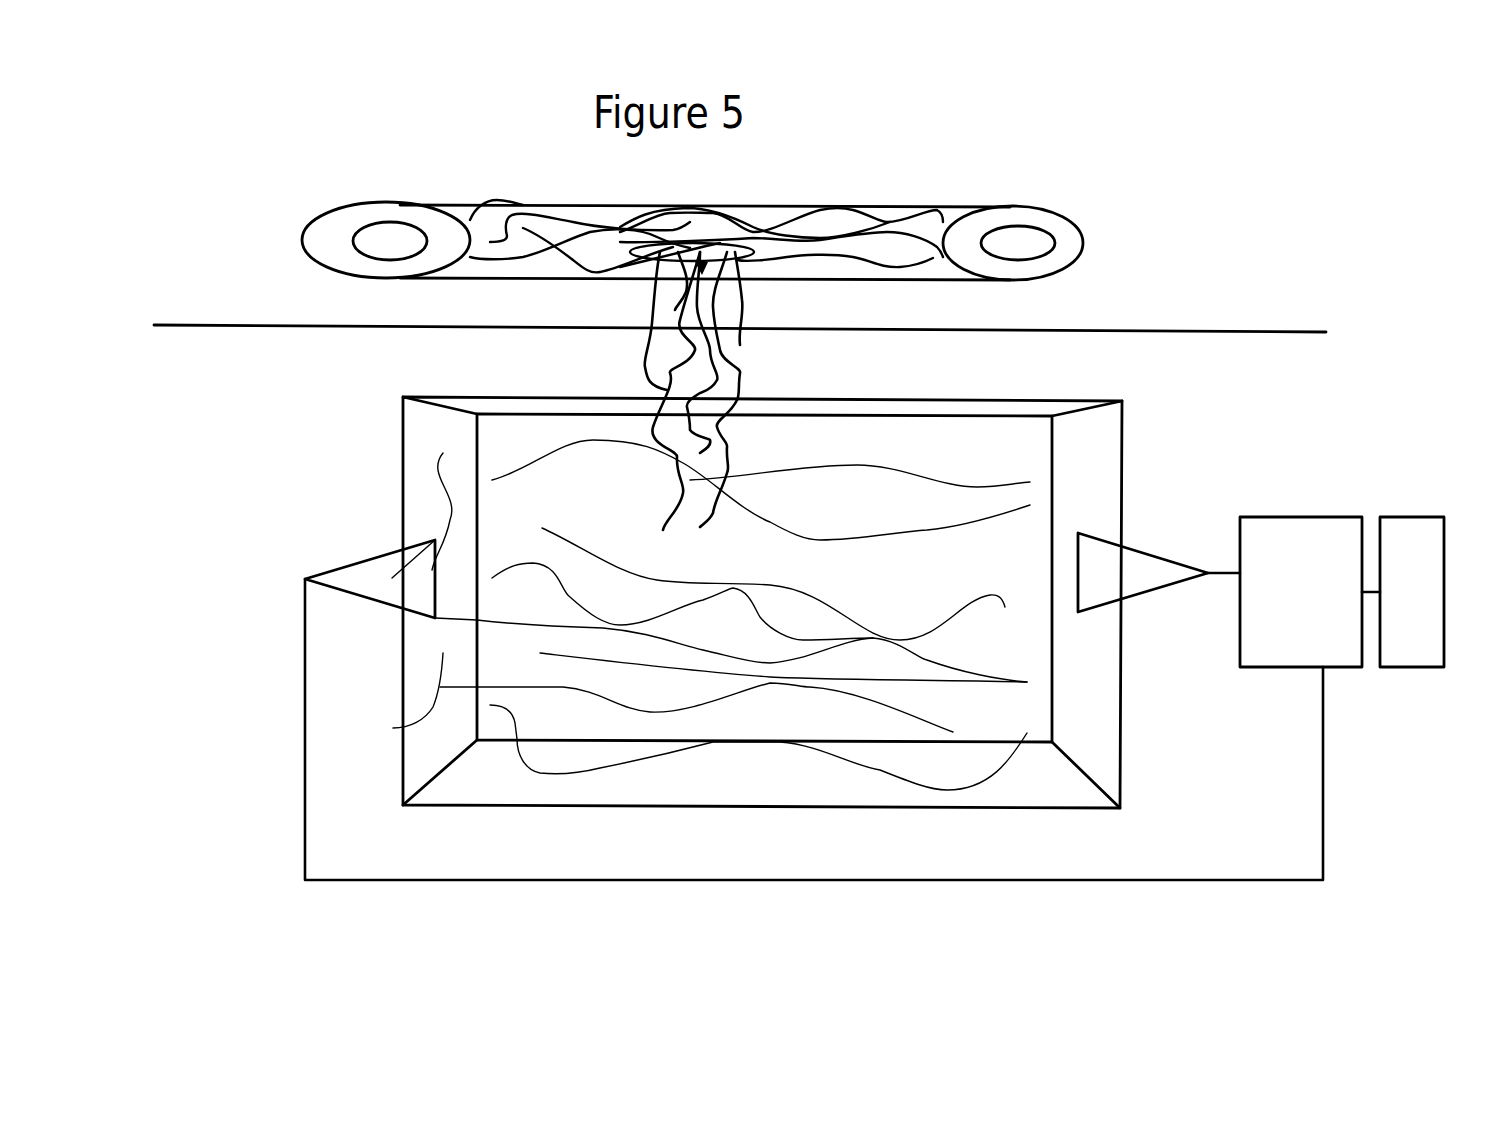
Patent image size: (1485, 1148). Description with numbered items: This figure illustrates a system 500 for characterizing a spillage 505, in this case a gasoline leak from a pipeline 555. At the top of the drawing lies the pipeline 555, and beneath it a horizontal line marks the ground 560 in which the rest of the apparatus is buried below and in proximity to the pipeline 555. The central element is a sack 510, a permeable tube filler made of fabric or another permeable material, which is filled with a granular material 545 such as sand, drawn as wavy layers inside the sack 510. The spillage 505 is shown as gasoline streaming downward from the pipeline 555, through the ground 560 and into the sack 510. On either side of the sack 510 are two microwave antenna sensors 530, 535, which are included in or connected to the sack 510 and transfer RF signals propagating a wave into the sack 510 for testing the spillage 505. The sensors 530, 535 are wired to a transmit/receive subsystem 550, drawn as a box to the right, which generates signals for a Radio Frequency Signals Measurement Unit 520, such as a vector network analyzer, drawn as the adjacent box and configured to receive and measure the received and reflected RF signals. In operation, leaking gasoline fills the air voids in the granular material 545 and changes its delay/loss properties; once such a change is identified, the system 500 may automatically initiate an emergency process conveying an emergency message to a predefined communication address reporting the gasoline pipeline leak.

The system 500 is at (365, 122).
The spillage 505 is at (630, 353).
The sack 510 is at (403, 425).
The Radio Frequency Signals Measurement Unit 520 is at (1395, 517).
The antenna sensor 530 is at (368, 557).
The antenna sensor 535 is at (1143, 547).
The granular material 545 is at (540, 773).
The transmit/receive subsystem 550 is at (1302, 517).
The pipeline 555 is at (945, 222).
The ground 560 is at (1177, 382).